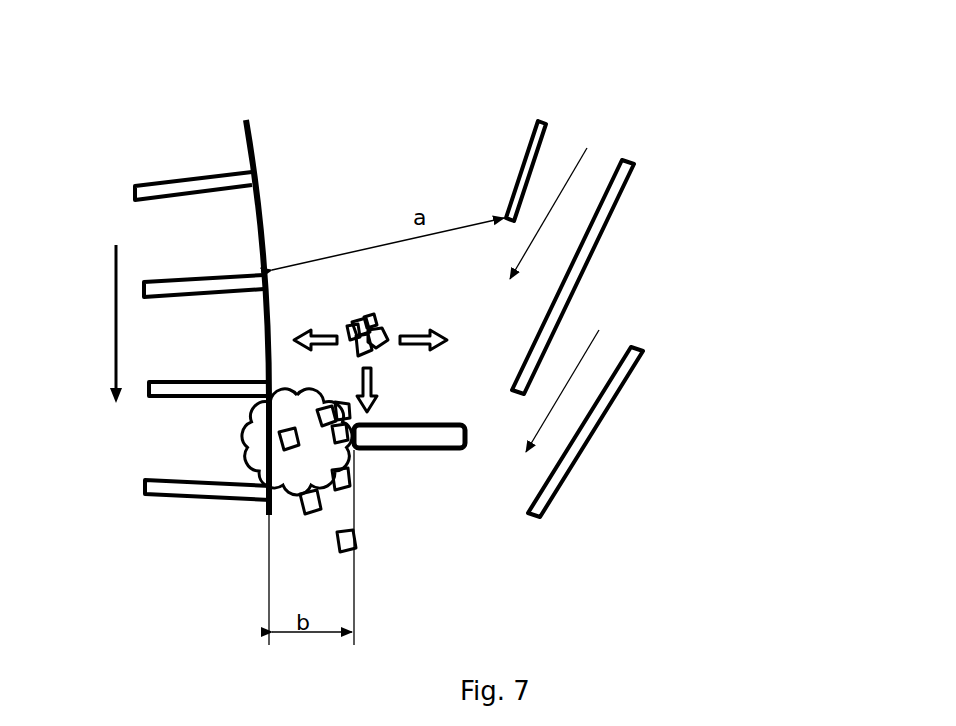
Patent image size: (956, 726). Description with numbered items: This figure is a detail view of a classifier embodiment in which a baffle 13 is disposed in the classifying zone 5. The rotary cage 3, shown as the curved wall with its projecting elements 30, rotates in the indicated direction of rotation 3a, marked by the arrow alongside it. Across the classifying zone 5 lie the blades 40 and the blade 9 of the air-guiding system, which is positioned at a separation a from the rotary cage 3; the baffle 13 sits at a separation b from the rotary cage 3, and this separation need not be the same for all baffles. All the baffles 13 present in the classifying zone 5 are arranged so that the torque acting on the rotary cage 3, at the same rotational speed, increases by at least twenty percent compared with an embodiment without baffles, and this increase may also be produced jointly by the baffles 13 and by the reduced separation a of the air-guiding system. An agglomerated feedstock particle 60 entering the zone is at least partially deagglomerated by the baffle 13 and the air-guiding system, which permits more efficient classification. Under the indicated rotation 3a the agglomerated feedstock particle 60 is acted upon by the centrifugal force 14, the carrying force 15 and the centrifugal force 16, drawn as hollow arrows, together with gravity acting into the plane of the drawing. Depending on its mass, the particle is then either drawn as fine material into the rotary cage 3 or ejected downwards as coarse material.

The rotary cage 3 is at (437, 326).
The direction of rotation 3a is at (112, 310).
The lifter fin 30 is at (372, 292).
The agglomerated feedstock particle 60 is at (355, 325).
The deflector blade 40 is at (640, 353).
The separating blade 9 is at (624, 165).
The classifying zone 5 is at (570, 248).
The centrifugal force 14 is at (586, 318).
The centrifugal force 16 is at (530, 375).
The carrying force 15 is at (555, 423).
The baffle 13 is at (563, 479).